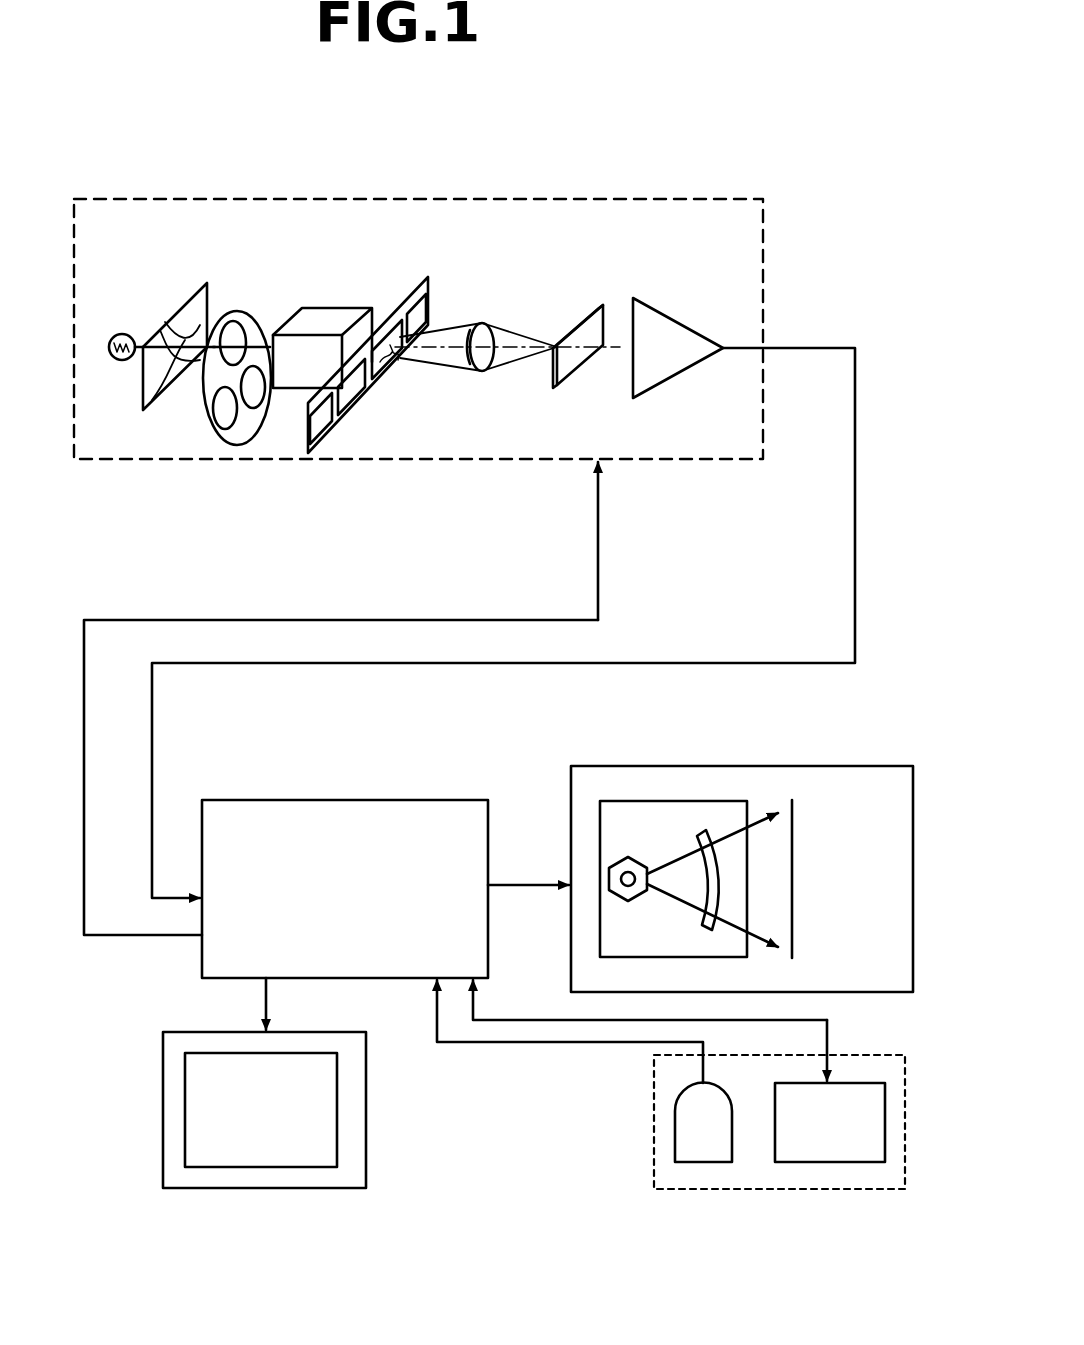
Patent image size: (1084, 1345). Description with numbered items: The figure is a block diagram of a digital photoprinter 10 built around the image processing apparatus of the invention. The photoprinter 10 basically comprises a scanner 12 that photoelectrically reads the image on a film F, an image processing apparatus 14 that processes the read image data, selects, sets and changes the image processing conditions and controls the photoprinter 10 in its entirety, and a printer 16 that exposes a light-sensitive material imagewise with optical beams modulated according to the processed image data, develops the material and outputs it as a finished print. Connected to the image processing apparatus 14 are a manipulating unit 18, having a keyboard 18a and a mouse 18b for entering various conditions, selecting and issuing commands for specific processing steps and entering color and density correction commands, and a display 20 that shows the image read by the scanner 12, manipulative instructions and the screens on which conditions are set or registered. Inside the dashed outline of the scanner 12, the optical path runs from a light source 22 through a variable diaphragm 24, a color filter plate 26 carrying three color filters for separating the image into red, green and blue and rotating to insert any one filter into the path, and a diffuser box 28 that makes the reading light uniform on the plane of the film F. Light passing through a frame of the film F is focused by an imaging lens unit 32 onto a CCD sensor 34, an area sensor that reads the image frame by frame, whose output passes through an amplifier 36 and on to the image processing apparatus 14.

The digital photoprinter 10 is at (840, 222).
The scanner 12 is at (137, 462).
The image processing apparatus 14 is at (347, 800).
The printer 16 is at (735, 766).
The manipulating unit 18 is at (755, 1192).
The keyboard 18a is at (835, 1163).
The mouse 18b is at (700, 1163).
The display 20 is at (256, 1190).
The light source 22 is at (122, 334).
The variable diaphragm 24 is at (173, 303).
The color filter plate 26 is at (233, 313).
The diffuser box 28 is at (318, 328).
The film F is at (395, 300).
The imaging lens unit 32 is at (483, 323).
The CCD sensor 34 is at (580, 323).
The amplifier 36 is at (682, 372).